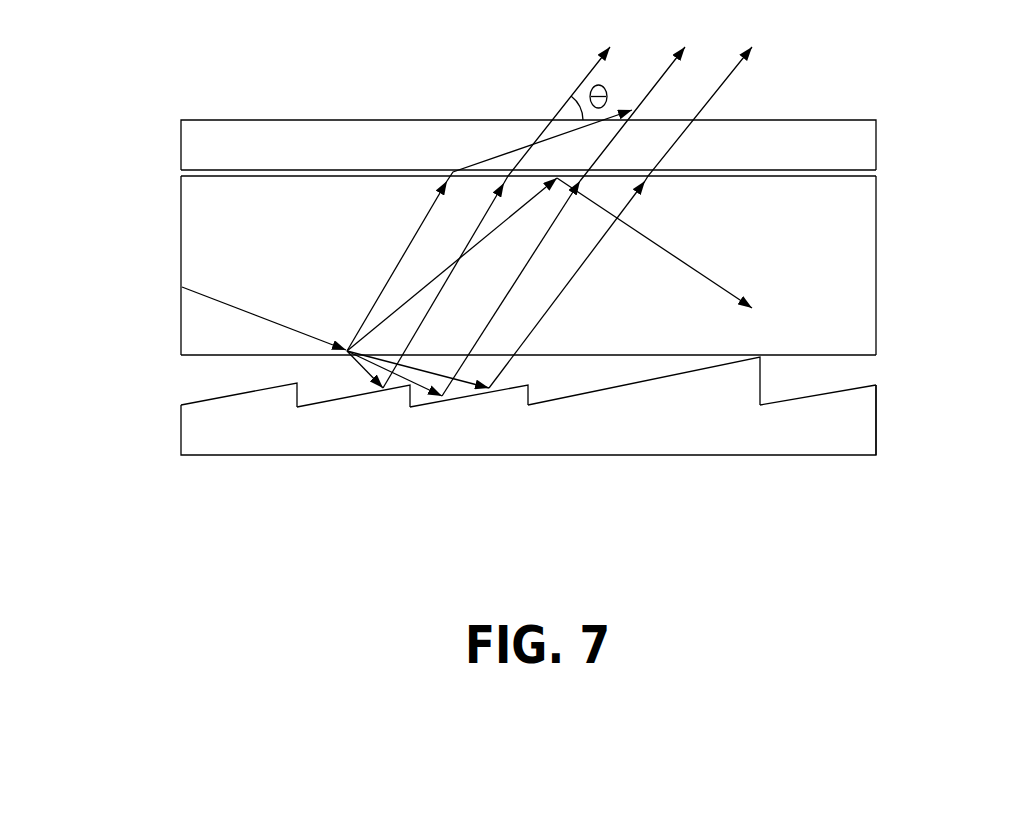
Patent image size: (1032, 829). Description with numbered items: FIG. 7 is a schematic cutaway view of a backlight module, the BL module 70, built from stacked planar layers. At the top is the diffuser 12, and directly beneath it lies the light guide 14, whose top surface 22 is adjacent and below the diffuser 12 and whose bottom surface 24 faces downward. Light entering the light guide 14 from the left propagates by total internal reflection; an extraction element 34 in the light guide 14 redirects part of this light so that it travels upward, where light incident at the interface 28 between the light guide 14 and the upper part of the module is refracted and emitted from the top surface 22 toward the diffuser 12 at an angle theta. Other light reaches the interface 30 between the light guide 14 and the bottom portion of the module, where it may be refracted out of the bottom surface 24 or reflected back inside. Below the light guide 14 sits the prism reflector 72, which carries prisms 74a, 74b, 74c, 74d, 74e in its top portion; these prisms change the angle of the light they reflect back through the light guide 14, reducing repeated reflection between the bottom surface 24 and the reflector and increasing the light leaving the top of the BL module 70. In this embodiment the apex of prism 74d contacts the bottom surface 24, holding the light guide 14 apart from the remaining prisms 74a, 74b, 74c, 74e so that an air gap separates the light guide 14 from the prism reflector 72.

The diffuser 12 is at (181, 137).
The top surface 22 is at (212, 175).
The light guide 14 is at (180, 239).
The extraction element 34 is at (346, 350).
The bottom surface 24 is at (237, 357).
The prism reflector 72 is at (478, 453).
The interface 28 is at (877, 173).
The interface 30 is at (857, 368).
The prism 74a is at (285, 398).
The prism 74b is at (393, 397).
The prism 74c is at (513, 397).
The prism 74d is at (740, 380).
The prism 74e is at (862, 400).
The BL module 70 is at (538, 327).